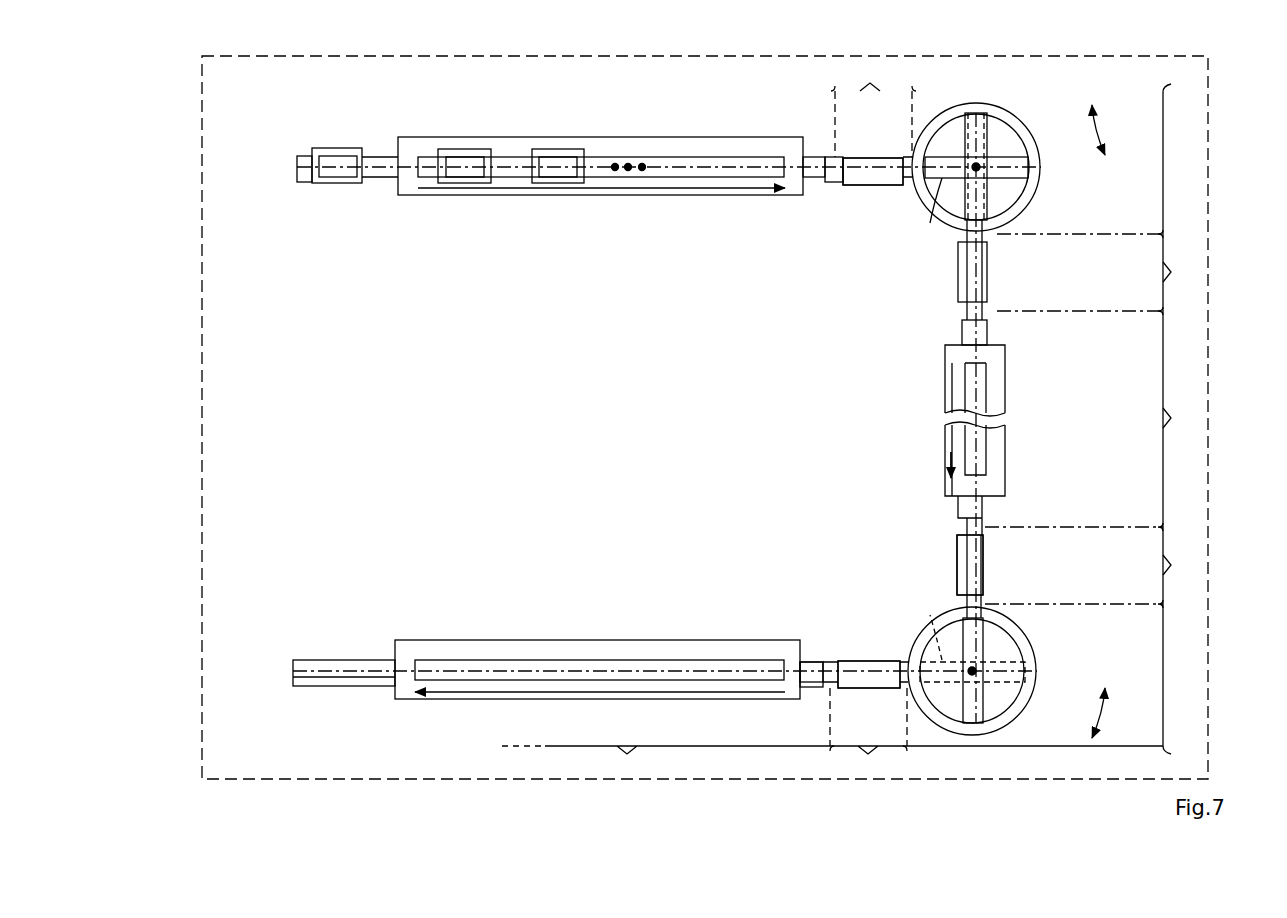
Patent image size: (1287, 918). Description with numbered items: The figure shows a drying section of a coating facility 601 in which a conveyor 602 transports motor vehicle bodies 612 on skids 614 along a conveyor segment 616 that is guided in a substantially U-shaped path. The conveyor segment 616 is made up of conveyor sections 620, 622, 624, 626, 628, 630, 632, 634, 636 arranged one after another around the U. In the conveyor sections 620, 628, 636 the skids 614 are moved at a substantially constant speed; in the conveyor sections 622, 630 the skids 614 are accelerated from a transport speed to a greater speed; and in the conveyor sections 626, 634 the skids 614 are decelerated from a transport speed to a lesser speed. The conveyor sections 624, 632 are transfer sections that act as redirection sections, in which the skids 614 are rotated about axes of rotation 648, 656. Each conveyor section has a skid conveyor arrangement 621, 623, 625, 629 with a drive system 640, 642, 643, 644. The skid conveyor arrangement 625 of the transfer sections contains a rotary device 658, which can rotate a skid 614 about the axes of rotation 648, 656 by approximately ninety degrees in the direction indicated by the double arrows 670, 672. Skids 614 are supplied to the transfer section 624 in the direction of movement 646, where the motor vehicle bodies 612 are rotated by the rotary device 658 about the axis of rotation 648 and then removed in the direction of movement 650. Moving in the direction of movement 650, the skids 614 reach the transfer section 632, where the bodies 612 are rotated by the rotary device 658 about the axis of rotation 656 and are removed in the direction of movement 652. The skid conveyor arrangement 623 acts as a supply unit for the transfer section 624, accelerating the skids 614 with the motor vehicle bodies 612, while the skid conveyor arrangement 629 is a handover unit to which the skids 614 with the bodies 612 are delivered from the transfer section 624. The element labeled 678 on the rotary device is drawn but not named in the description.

The coating facility 601 is at (243, 62).
The conveyor 602 is at (293, 165).
The motor vehicle body 612 is at (353, 156).
The skid 614 is at (325, 148).
The conveyor segment 616 is at (312, 668).
The conveyor section 620 is at (1163, 91).
The skid conveyor arrangement 621 is at (810, 157).
The conveyor section 622 is at (873, 110).
The skid conveyor arrangement 623 is at (869, 158).
The conveyor section 624 is at (1102, 407).
The skid conveyor arrangement 625 is at (1044, 168).
The conveyor section 626 is at (1102, 270).
The conveyor section 628 is at (1096, 417).
The skid conveyor arrangement 629 is at (987, 275).
The conveyor section 630 is at (1096, 565).
The conveyor section 632 is at (1055, 758).
The conveyor section 634 is at (868, 733).
The conveyor section 636 is at (666, 762).
The drive system 640 is at (826, 182).
The drive system 642 is at (890, 185).
The drive system 643 is at (958, 275).
The drive system 644 is at (922, 419).
The direction of movement 646 is at (615, 190).
The axis of rotation 648 is at (980, 172).
The direction of movement 650 is at (945, 452).
The direction of movement 652 is at (612, 699).
The axis of rotation 656 is at (975, 668).
The rotary device 658 is at (1010, 130).
The double arrow 670 is at (1099, 125).
The double arrow 672 is at (1099, 721).
The bevel gear shaft 678 is at (1010, 148).